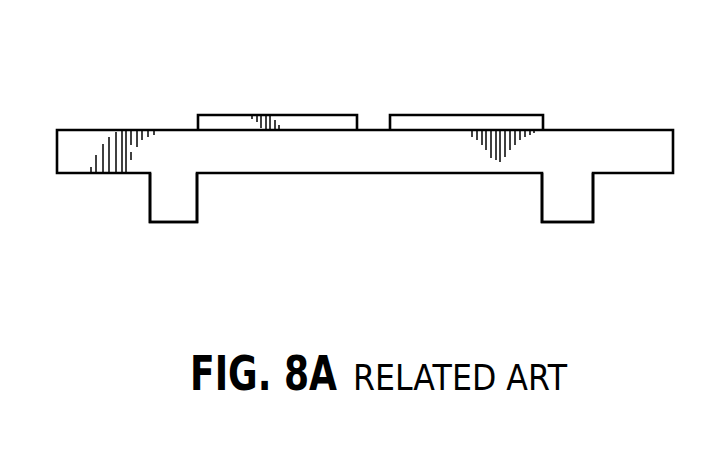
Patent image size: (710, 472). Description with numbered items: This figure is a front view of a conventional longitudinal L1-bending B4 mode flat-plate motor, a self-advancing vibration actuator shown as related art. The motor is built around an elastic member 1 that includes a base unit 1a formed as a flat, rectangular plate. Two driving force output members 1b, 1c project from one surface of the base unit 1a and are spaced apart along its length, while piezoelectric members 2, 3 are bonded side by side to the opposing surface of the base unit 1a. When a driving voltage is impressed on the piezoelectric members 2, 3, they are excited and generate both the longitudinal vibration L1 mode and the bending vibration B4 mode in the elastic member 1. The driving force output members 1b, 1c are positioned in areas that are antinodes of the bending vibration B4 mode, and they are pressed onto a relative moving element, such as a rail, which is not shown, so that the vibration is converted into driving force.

The elastic member 1 is at (628, 128).
The base unit 1a is at (160, 155).
The driving force output member 1b is at (179, 201).
The driving force output member 1c is at (575, 201).
The piezoelectric member 2 is at (307, 122).
The piezoelectric member 3 is at (482, 122).